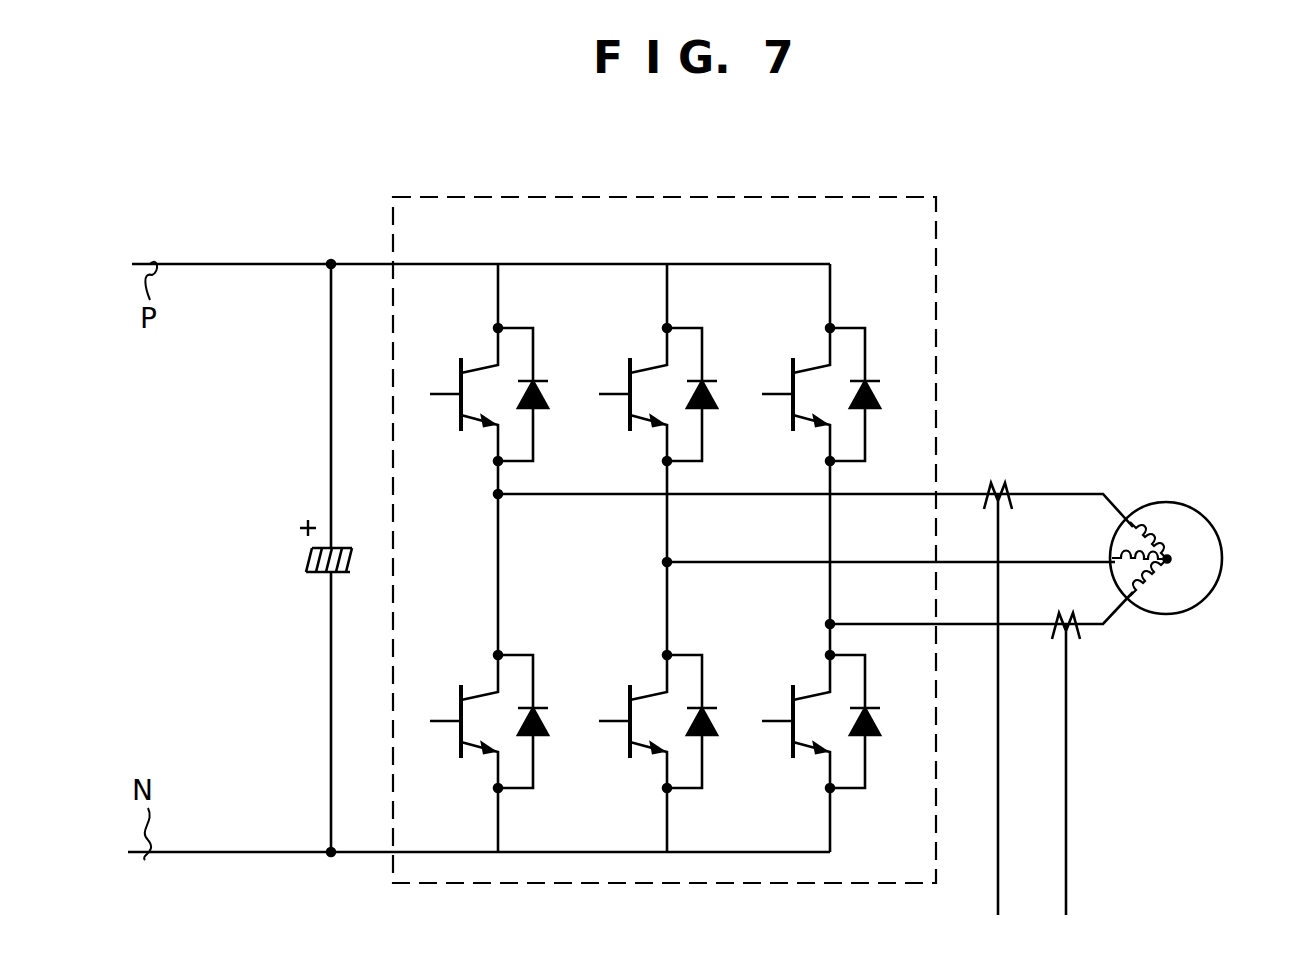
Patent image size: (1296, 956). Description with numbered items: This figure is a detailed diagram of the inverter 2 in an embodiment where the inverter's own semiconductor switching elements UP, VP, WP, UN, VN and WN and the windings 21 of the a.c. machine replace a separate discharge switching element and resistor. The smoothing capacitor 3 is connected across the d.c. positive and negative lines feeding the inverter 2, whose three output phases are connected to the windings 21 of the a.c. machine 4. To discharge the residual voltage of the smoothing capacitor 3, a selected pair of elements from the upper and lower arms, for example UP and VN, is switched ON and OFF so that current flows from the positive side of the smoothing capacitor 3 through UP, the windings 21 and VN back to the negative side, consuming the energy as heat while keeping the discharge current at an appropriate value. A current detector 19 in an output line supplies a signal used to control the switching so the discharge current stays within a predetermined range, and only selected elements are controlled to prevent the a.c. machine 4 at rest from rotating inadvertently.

The inverter 2 is at (936, 238).
The smoothing capacitor 3 is at (306, 552).
The a.c. machine 4 is at (1197, 529).
The current detector 19 is at (1003, 483).
The windings of the a.c. machine 21 is at (1152, 531).